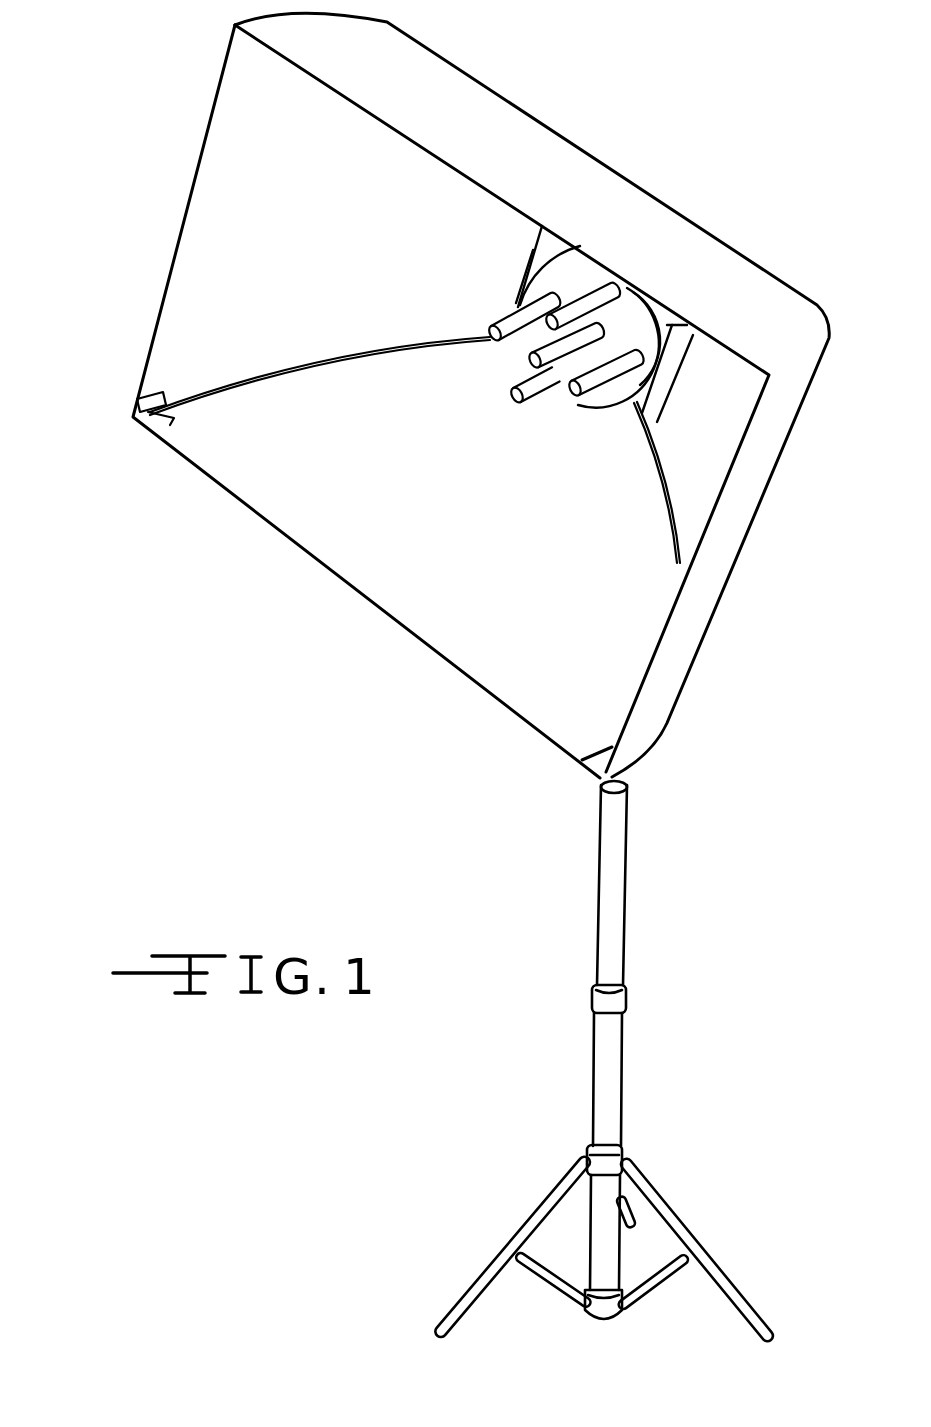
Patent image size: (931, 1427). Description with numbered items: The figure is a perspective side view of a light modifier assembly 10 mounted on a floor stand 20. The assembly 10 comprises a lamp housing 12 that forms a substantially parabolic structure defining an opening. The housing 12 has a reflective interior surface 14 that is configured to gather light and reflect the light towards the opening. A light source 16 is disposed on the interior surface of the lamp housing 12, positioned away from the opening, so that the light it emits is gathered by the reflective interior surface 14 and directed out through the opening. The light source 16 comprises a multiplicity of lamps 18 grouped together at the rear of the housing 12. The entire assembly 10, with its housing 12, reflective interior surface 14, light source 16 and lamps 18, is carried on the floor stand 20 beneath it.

The light modifier assembly 10 is at (450, 678).
The lamp housing 12 is at (452, 64).
The reflective interior surface 14 is at (348, 243).
The light source 16 is at (563, 278).
The lamps 18 is at (497, 345).
The floor stand 20 is at (617, 897).